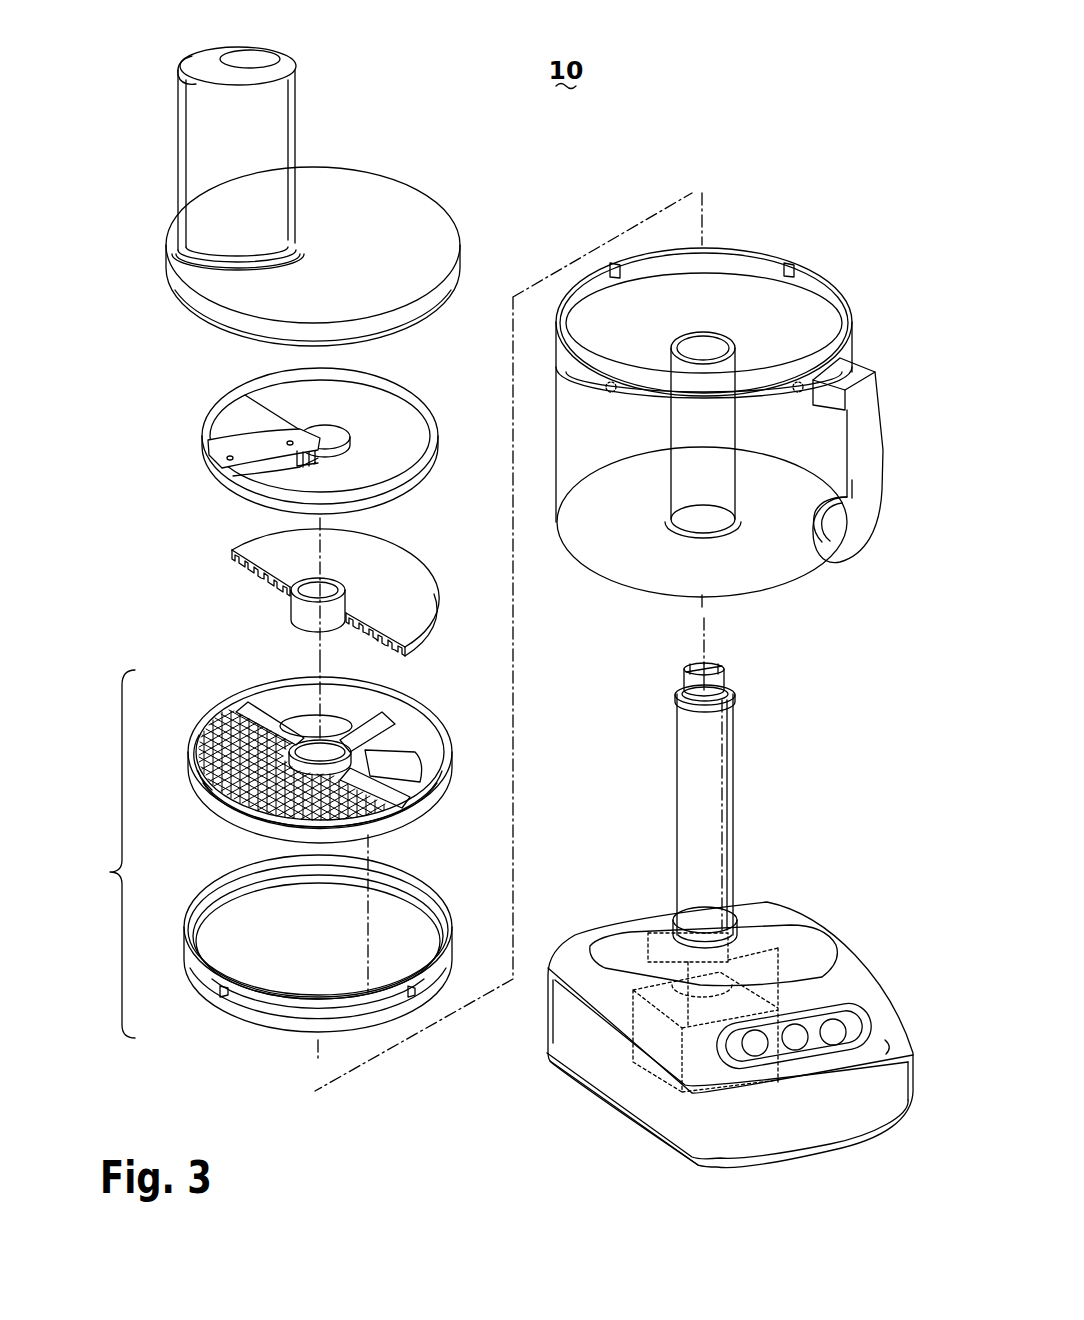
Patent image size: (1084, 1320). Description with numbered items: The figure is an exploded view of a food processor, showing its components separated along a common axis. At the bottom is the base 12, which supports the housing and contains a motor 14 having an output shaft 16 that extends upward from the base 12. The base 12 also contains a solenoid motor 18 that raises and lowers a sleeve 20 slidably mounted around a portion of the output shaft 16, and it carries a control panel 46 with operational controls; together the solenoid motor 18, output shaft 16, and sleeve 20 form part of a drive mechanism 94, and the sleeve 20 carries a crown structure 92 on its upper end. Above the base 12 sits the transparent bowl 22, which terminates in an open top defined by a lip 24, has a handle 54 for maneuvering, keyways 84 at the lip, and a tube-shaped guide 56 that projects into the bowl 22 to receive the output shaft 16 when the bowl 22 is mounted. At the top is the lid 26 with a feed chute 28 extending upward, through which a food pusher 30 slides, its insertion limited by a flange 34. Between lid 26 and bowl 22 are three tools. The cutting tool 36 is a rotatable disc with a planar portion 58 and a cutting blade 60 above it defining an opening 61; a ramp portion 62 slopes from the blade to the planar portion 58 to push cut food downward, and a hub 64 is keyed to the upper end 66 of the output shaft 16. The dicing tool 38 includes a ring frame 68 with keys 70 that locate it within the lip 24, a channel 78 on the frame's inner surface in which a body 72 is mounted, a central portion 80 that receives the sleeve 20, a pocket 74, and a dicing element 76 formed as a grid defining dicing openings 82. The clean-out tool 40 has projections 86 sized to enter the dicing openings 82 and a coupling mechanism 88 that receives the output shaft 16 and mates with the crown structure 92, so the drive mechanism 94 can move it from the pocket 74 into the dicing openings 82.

The base 12 is at (727, 1006).
The motor 14 is at (657, 1047).
The output shaft 16 is at (762, 784).
The solenoid motor 18 is at (578, 930).
The sleeve 20 is at (673, 877).
The bowl 22 is at (742, 418).
The lip 24 is at (828, 340).
The lid 26 is at (167, 228).
The feed chute 28 is at (178, 124).
The food pusher 30 is at (265, 124).
The flange 34 is at (182, 70).
The cutting tool 36 is at (288, 431).
The dicing tool 38 is at (105, 854).
The clean-out tool 40 is at (308, 592).
The control panel 46 is at (838, 1034).
The handle 54 is at (850, 437).
The guide 56 is at (716, 372).
The planar portion 58 is at (393, 405).
The cutting blade 60 is at (258, 452).
The opening 61 is at (253, 473).
The ramp portion 62 is at (240, 410).
The hub 64 is at (303, 467).
The upper end 66 is at (716, 663).
The frame 68 is at (289, 942).
The keys 70 is at (220, 992).
The body 72 is at (306, 756).
The pocket 74 is at (362, 717).
The dicing element 76 is at (232, 765).
The channel 78 is at (225, 890).
The central portion 80 is at (312, 745).
The dicing openings 82 is at (290, 757).
The keyways 84 is at (617, 262).
The projections 86 is at (287, 592).
The coupling mechanism 88 is at (345, 585).
The crown structure 92 is at (734, 692).
The drive mechanism 94 is at (742, 930).